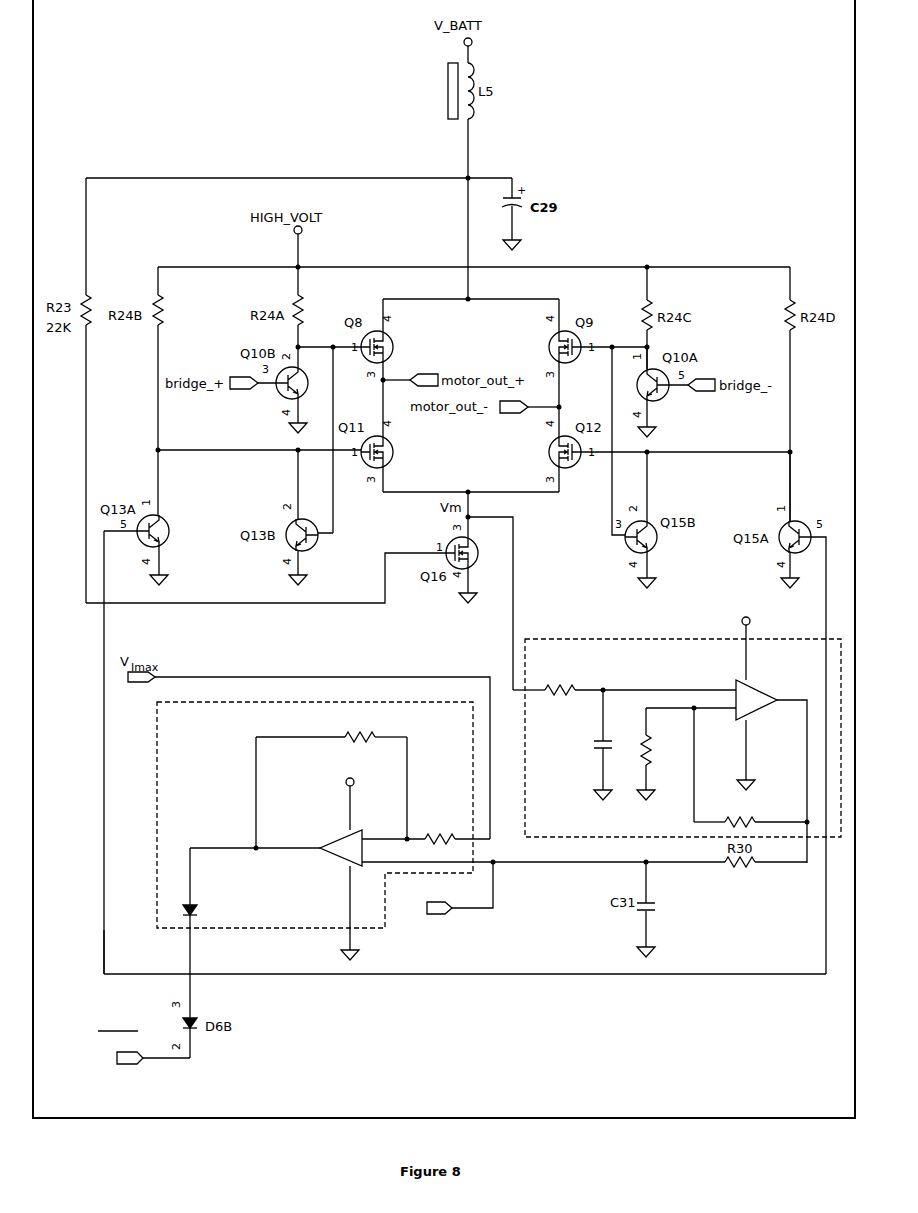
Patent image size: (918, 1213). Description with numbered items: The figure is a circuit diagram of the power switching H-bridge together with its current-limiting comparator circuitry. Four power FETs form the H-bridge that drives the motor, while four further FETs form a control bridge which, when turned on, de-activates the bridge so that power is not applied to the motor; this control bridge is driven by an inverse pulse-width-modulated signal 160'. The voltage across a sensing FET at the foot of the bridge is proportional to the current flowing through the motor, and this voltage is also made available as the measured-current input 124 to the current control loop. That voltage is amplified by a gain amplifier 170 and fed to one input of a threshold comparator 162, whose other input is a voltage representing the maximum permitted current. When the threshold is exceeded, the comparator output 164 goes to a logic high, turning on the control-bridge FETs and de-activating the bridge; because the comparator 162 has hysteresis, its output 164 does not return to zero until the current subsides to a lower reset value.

The threshold comparator 162 is at (233, 702).
The comparator output 164 is at (120, 961).
The gain amplifier 170 is at (574, 641).
The second input 124 is at (448, 912).
The inverse PWM signal 160' is at (145, 1062).